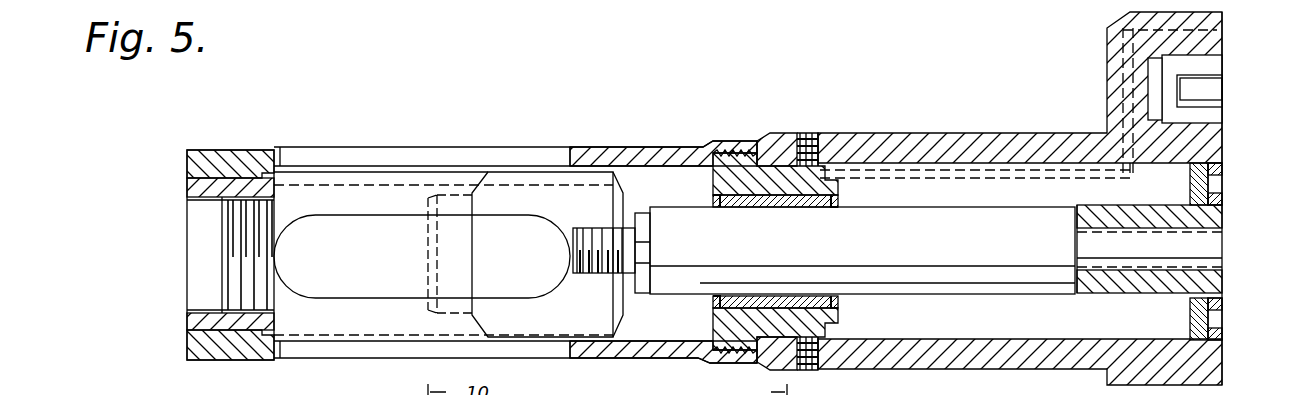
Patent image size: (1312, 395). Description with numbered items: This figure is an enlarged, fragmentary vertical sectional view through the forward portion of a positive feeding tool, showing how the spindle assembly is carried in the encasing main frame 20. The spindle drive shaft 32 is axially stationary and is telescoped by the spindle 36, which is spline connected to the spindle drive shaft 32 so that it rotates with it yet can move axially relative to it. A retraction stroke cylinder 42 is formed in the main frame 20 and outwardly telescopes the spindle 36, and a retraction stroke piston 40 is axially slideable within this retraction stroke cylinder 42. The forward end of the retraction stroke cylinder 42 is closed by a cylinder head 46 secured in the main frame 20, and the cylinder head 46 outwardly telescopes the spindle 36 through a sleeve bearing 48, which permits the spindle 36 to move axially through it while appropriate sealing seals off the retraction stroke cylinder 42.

The main frame 20 is at (212, 148).
The spindle drive shaft 32 is at (1210, 250).
The spindle 36 is at (673, 222).
The retraction stroke piston 40 is at (1218, 185).
The retraction stroke cylinder 42 is at (972, 187).
The cylinder head 46 is at (737, 152).
The sleeve bearing 48 is at (779, 175).